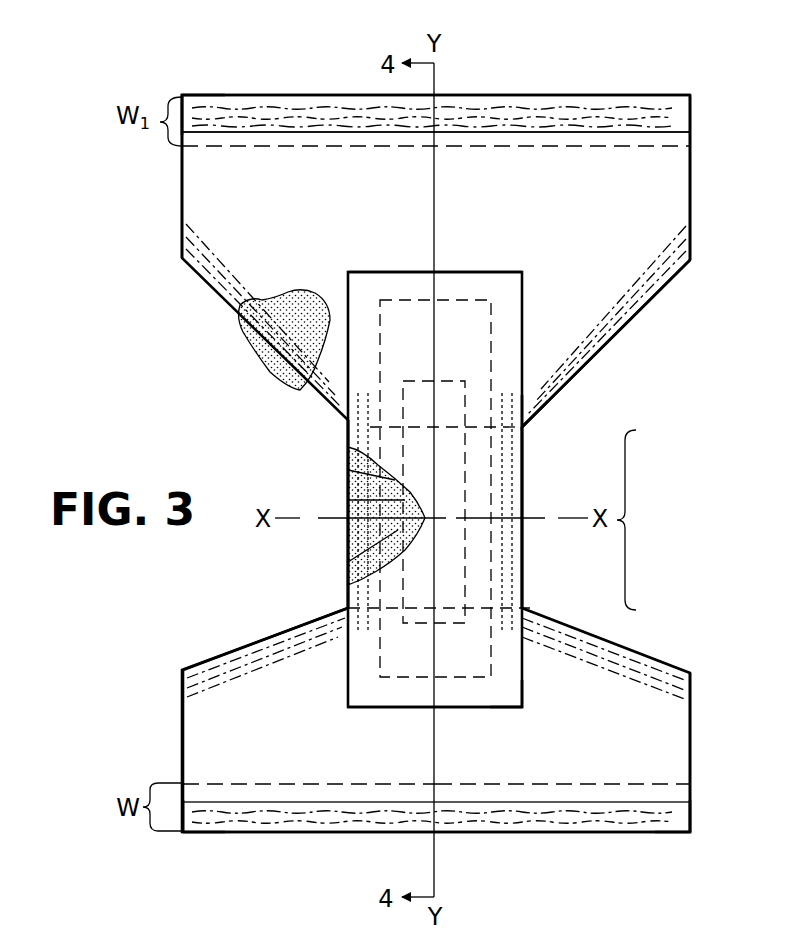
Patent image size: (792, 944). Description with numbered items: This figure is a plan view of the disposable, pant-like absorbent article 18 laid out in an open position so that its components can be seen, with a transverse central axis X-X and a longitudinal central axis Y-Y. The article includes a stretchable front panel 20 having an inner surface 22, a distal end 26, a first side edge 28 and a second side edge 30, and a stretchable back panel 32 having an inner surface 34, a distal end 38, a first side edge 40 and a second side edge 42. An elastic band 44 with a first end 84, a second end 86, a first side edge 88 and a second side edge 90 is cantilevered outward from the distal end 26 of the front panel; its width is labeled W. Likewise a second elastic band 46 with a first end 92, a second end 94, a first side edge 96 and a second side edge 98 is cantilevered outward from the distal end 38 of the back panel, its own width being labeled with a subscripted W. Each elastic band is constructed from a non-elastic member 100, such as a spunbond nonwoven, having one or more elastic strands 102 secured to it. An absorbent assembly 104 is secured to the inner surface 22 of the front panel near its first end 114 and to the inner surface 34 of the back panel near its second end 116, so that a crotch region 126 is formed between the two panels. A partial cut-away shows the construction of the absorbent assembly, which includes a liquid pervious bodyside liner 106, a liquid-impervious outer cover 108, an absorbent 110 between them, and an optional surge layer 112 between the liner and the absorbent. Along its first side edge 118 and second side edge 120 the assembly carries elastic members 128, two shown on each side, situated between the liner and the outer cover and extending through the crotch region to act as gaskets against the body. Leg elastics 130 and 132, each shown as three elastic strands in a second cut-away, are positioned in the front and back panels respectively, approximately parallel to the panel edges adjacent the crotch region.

The absorbent article 18 is at (686, 66).
The stretchable front panel 20 is at (662, 724).
The inner surface 22 is at (556, 762).
The distal end 26 is at (690, 800).
The first side edge 28 is at (183, 735).
The second side edge 30 is at (692, 740).
The stretchable back panel 32 is at (668, 193).
The inner surface 34 is at (566, 216).
The distal end 38 is at (690, 132).
The first side edge 40 is at (181, 195).
The second side edge 42 is at (692, 233).
The elastic band 44 is at (674, 823).
The second elastic band 46 is at (679, 106).
The first end 84 is at (318, 782).
The second end 86 is at (612, 834).
The first side edge 88 is at (183, 832).
The second side edge 90 is at (692, 816).
The first end 92 is at (488, 148).
The second end 94 is at (612, 94).
The first side edge 96 is at (181, 96).
The second side edge 98 is at (690, 118).
The non-elastic member 100 is at (462, 112).
The elastic strands 102 is at (580, 118).
The absorbent assembly 104 is at (528, 450).
The liquid pervious bodyside liner 106 is at (522, 694).
The liquid-impervious outer cover 108 is at (350, 585).
The absorbent 110 is at (350, 545).
The surge layer 112 is at (350, 505).
The first end 114 is at (470, 707).
The second end 116 is at (480, 272).
The first side edge 118 is at (348, 425).
The second side edge 120 is at (530, 427).
The crotch region 126 is at (651, 520).
The elastic members 128 is at (528, 470).
The leg elastics 130 is at (250, 660).
The leg elastics 132 is at (292, 348).